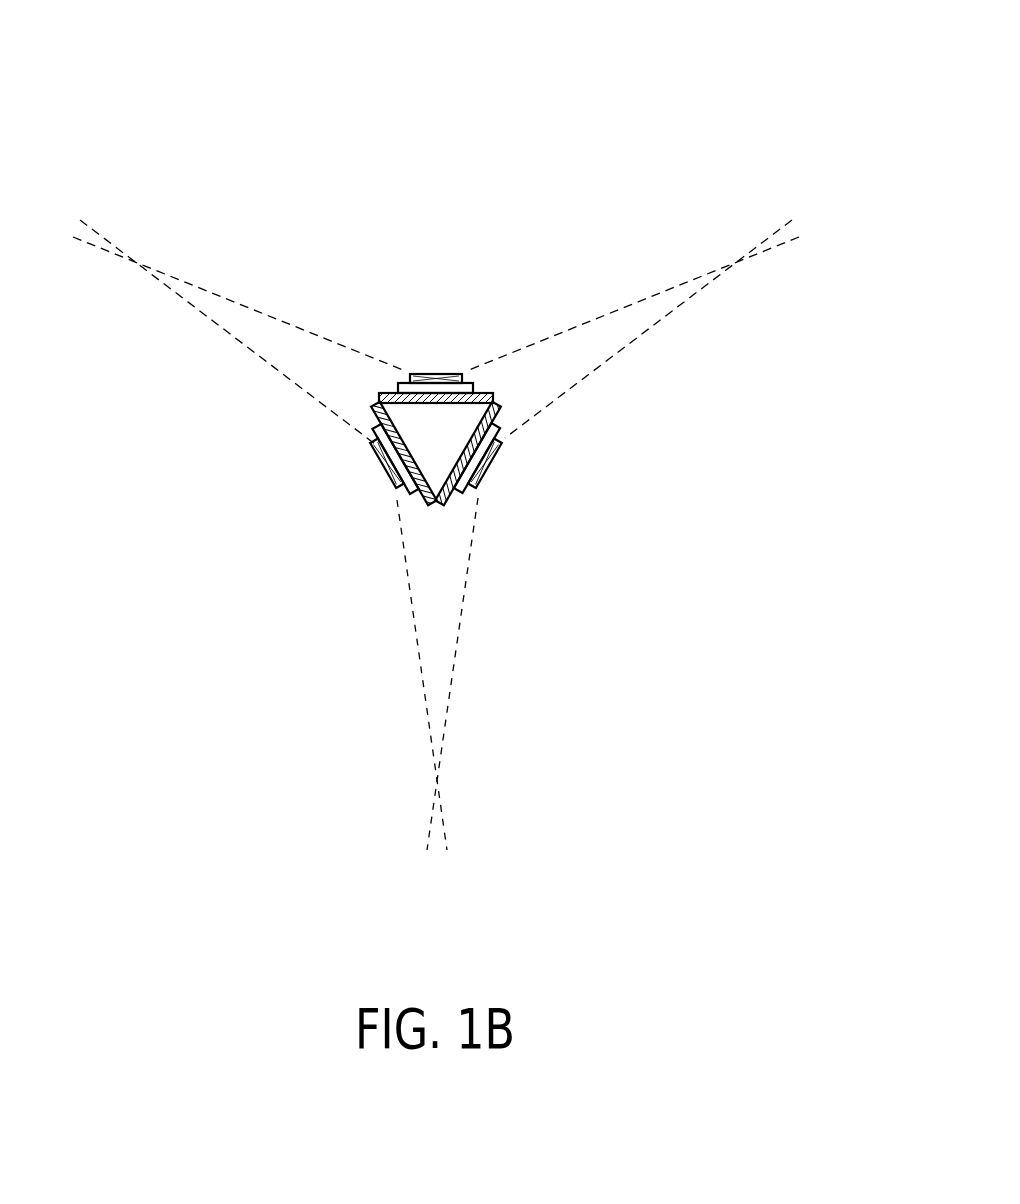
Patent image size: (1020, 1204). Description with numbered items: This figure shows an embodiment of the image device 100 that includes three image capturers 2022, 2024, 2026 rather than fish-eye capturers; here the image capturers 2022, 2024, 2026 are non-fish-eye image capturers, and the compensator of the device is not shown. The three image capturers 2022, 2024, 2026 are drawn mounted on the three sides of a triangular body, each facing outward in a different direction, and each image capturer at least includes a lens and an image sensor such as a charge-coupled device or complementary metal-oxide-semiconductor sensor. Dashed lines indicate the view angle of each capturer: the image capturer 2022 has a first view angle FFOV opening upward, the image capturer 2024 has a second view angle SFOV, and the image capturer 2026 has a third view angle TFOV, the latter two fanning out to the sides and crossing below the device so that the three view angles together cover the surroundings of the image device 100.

The image device 100 is at (535, 286).
The image capturer 2022 is at (473, 387).
The image capturer 2024 is at (400, 493).
The image capturer 2026 is at (500, 436).
The first view angle FFOV is at (247, 307).
The second view angle SFOV is at (228, 333).
The third view angle TFOV is at (643, 333).